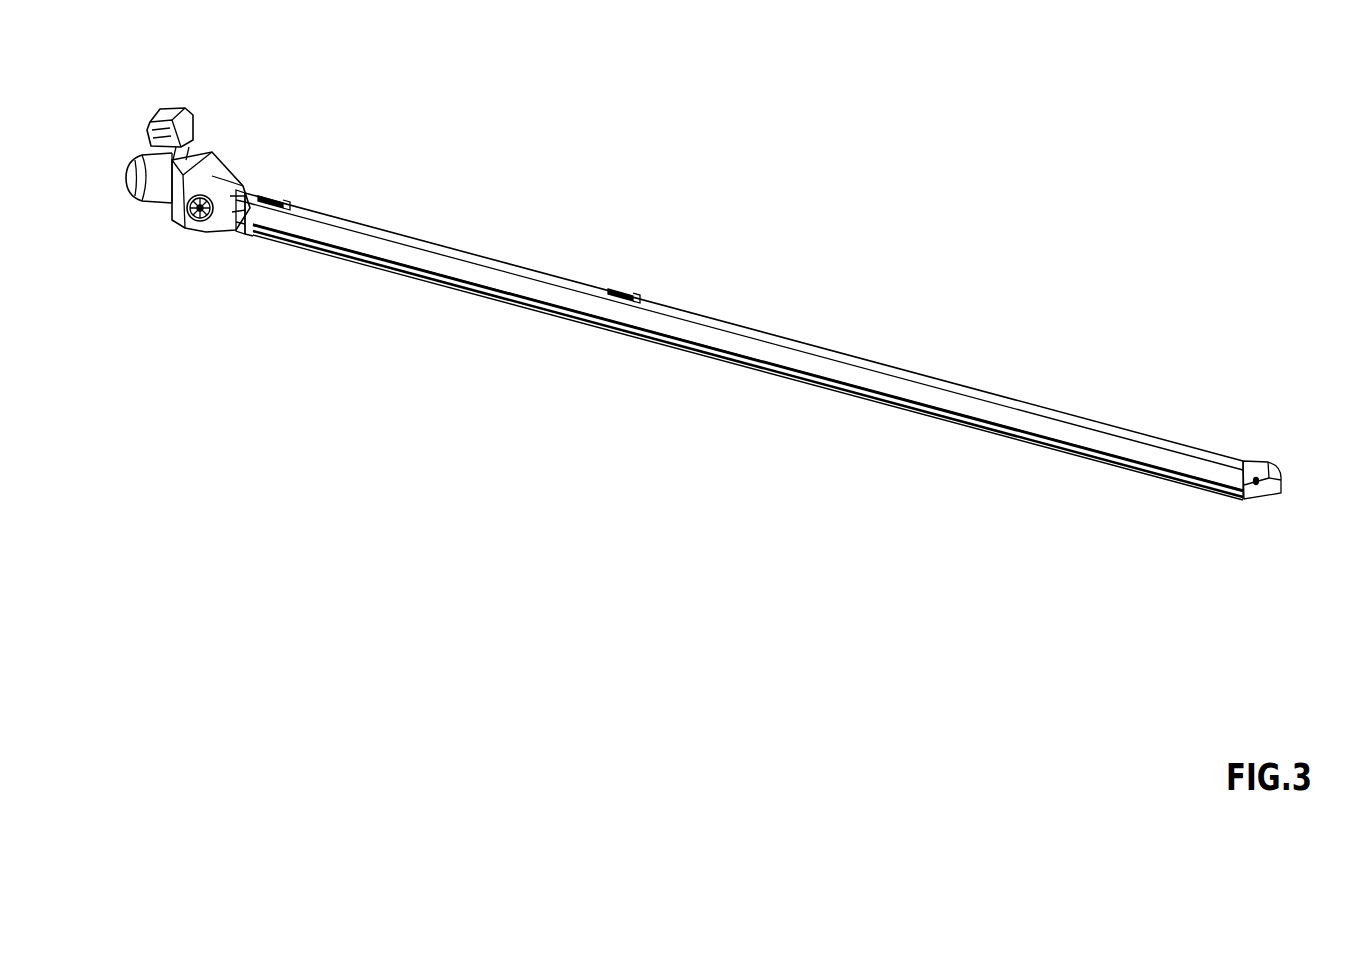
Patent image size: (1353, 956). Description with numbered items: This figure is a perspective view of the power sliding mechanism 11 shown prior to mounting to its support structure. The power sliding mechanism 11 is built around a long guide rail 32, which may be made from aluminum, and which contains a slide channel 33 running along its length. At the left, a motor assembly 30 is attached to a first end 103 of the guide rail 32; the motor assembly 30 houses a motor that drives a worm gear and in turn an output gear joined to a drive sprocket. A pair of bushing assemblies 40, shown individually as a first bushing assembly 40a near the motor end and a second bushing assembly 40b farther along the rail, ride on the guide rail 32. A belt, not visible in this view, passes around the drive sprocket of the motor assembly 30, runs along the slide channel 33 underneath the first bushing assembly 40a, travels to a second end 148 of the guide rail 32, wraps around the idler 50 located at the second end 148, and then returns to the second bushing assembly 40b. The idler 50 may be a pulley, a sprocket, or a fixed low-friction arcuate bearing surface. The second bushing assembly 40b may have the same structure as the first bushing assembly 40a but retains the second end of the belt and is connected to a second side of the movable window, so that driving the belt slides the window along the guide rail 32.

The power sliding mechanism 11 is at (706, 338).
The motor assembly 30 is at (184, 224).
The first end 103 is at (257, 236).
The slide channel 33 is at (775, 352).
The guide rail 32 is at (886, 400).
The bushing assemblies 40 is at (511, 220).
The first bushing assembly 40a is at (275, 196).
The second bushing assembly 40b is at (628, 288).
The second end 148 is at (1228, 514).
The idler 50 is at (1257, 486).